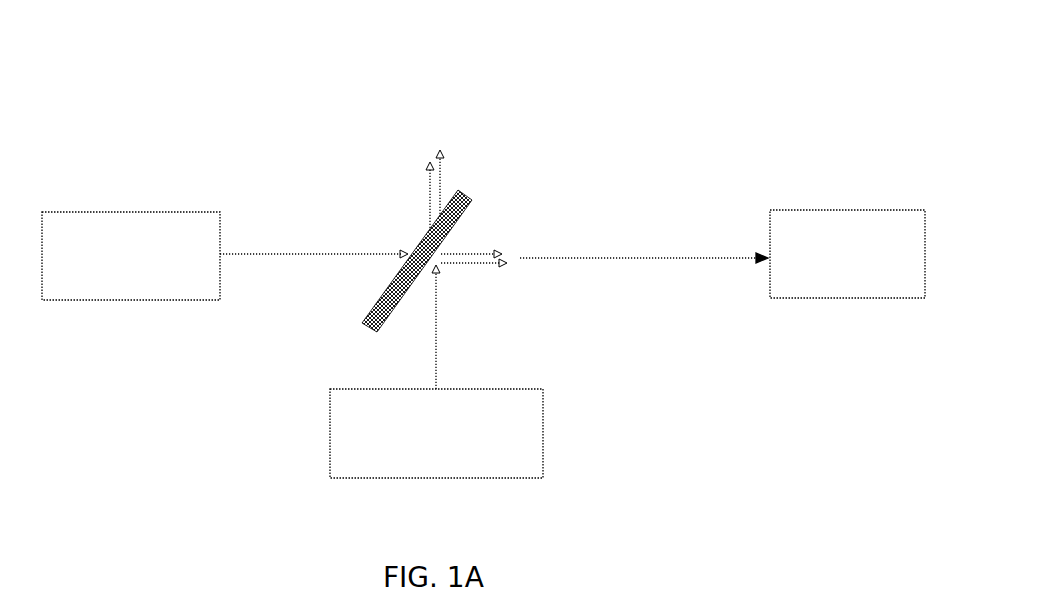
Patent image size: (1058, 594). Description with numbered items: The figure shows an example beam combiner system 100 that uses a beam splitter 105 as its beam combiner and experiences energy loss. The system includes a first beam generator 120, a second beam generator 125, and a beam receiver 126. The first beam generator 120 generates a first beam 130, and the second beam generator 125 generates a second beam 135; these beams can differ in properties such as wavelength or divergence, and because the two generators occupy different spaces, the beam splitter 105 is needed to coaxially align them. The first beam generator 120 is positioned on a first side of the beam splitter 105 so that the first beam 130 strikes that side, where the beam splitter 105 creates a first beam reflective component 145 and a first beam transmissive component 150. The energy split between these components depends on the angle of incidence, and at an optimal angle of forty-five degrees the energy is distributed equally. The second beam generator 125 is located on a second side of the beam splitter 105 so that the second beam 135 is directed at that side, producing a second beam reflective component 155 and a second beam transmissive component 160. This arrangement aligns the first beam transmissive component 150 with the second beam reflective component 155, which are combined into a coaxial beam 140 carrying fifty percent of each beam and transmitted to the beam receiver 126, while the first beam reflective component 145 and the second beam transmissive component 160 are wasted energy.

The beam combiner system 100 is at (587, 86).
The beam splitter 105 is at (423, 243).
The first beam generator 120 is at (102, 300).
The second beam generator 125 is at (363, 480).
The beam receiver 126 is at (868, 298).
The first beam 130 is at (343, 252).
The second beam 135 is at (438, 328).
The coaxial beam 140 is at (643, 262).
The first beam reflective component 145 is at (432, 183).
The first beam transmissive component 150 is at (483, 253).
The second beam reflective component 155 is at (470, 263).
The second beam transmissive component 160 is at (443, 183).